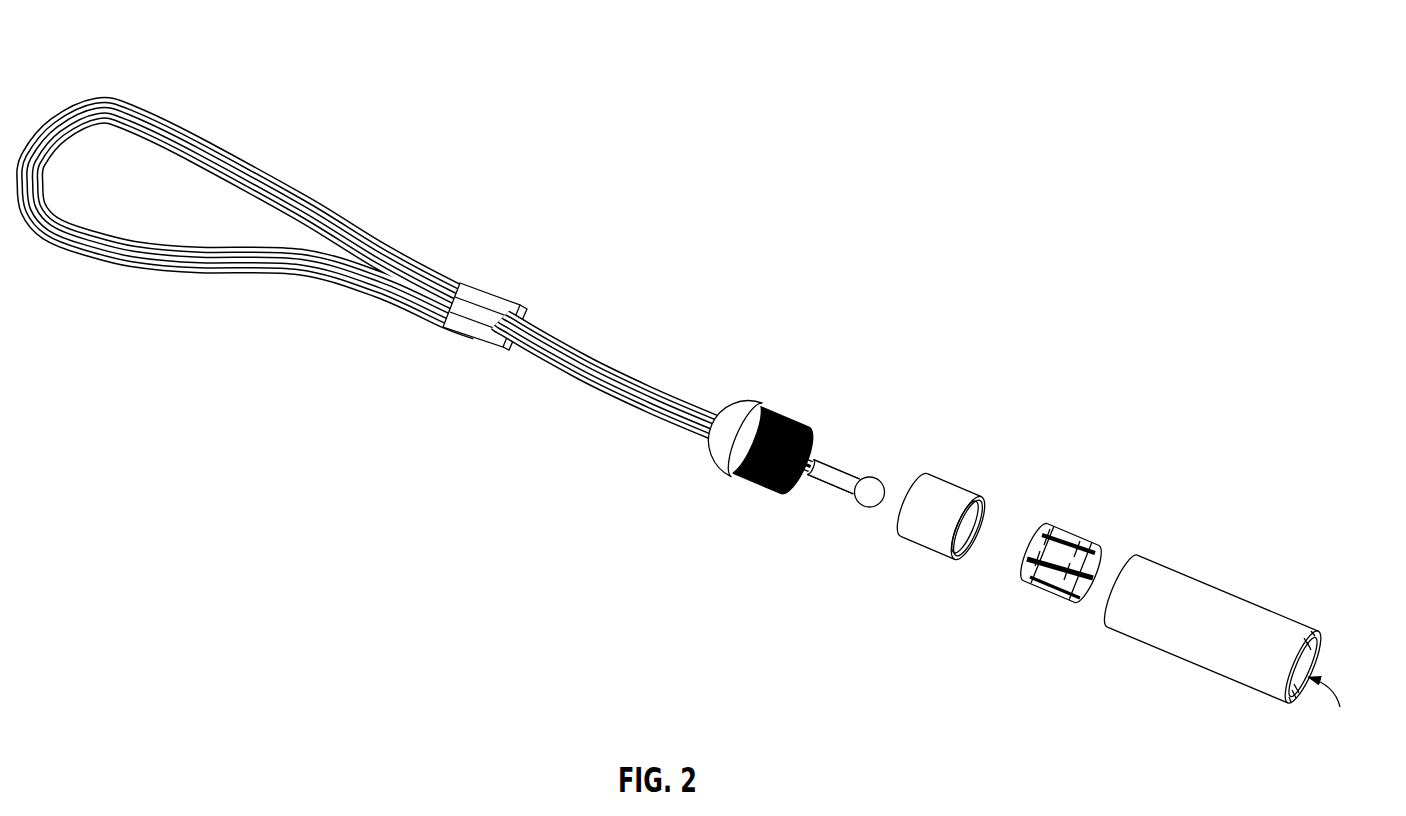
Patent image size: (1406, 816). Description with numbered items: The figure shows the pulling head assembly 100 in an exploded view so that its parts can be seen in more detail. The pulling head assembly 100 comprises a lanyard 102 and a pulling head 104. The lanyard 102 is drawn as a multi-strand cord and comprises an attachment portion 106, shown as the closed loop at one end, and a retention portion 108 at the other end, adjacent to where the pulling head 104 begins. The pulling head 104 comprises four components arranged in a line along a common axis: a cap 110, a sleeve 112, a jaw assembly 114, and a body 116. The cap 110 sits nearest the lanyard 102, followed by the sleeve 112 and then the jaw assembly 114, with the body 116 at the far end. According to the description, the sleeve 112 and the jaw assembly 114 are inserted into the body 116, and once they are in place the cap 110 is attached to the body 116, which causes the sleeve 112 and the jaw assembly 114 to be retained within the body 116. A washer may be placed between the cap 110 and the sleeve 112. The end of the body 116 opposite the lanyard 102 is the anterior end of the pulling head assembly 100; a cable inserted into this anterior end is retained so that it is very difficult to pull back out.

The pulling head assembly 100 is at (709, 411).
The lanyard 102 is at (474, 354).
The pulling head 104 is at (1048, 516).
The attachment portion 106 is at (160, 290).
The retention portion 108 is at (838, 497).
The cap 110 is at (773, 401).
The sleeve 112 is at (952, 488).
The jaw assembly 114 is at (1055, 523).
The body 116 is at (1168, 583).